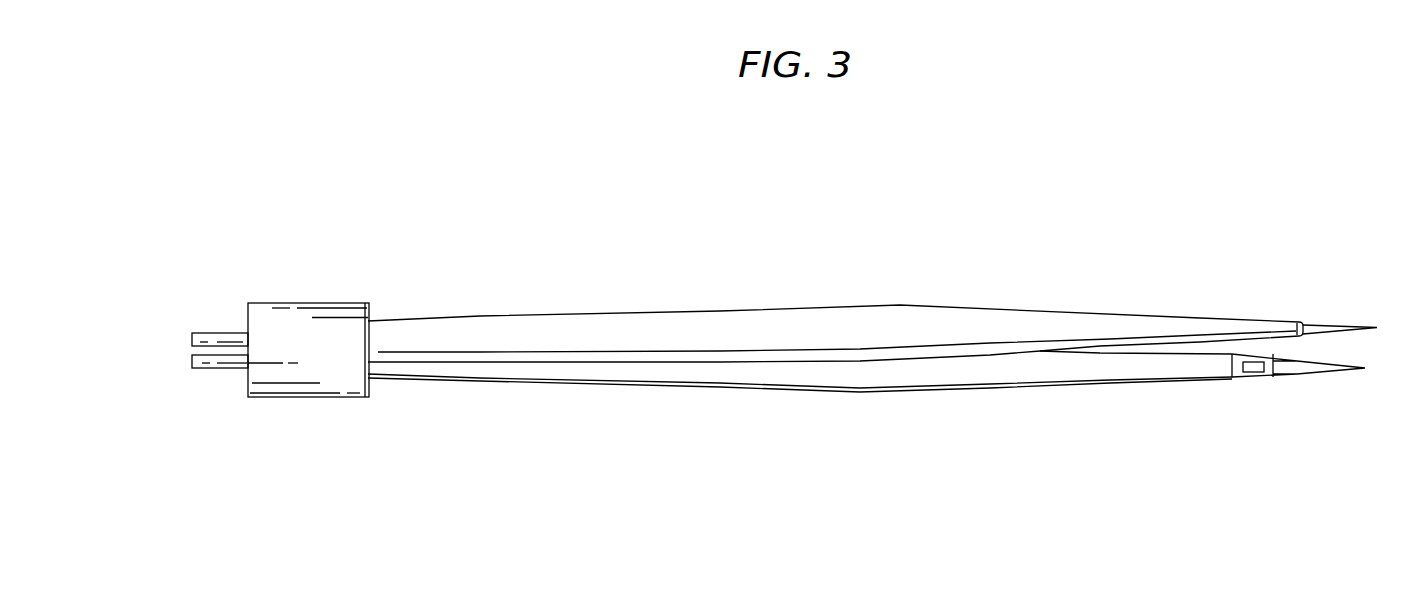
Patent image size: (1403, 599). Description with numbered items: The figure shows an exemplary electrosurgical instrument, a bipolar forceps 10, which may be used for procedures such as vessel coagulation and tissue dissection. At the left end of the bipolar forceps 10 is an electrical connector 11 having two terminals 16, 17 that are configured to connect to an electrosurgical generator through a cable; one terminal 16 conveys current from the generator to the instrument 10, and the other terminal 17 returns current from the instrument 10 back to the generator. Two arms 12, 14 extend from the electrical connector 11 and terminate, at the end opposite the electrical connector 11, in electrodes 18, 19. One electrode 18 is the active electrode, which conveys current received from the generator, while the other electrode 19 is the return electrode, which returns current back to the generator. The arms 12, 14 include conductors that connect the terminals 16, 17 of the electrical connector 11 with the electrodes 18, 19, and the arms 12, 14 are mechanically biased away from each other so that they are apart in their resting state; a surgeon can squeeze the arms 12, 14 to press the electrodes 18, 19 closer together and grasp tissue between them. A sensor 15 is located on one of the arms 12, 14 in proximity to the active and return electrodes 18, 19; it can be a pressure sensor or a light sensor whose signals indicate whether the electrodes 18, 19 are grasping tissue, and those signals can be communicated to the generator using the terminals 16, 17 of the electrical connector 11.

The bipolar forceps 10 is at (993, 208).
The electrical connector 11 is at (302, 303).
The arm 12 is at (810, 323).
The arm 14 is at (772, 392).
The sensor 15 is at (1245, 380).
The terminal 16 is at (222, 333).
The terminal 17 is at (222, 368).
The active electrode 18 is at (1337, 324).
The return electrode 19 is at (1335, 373).